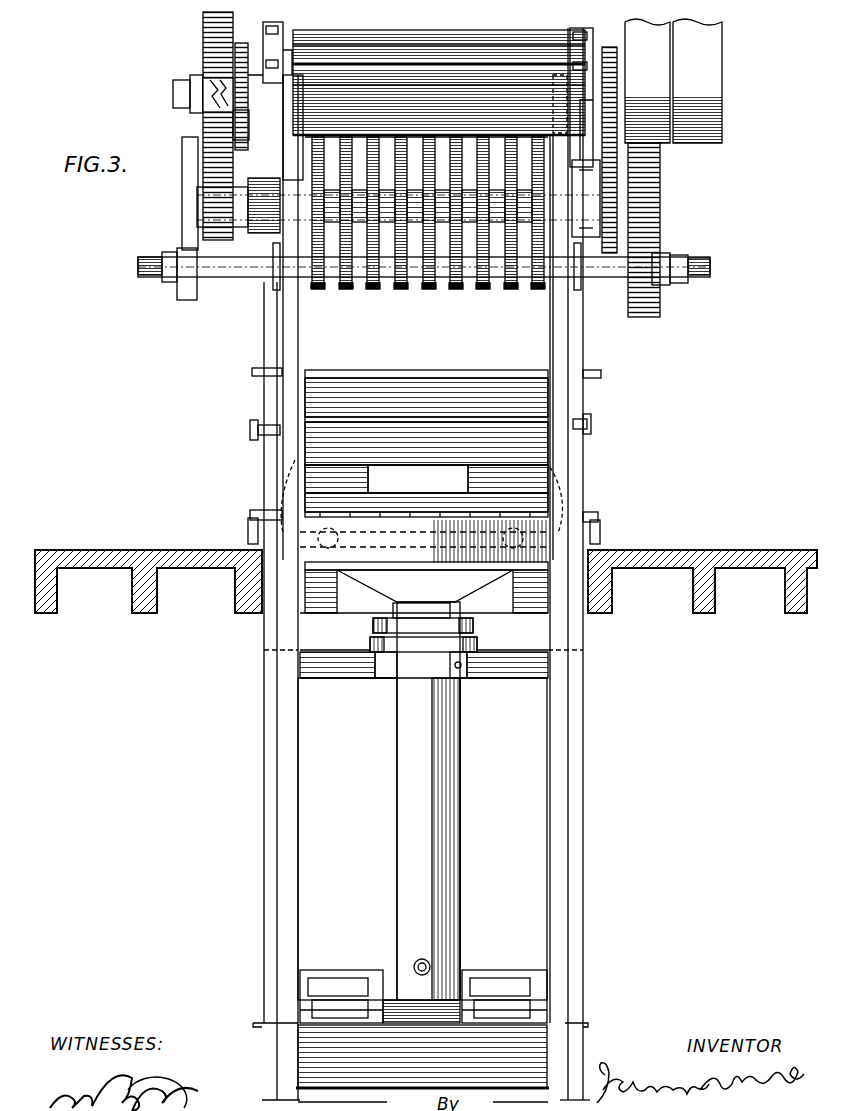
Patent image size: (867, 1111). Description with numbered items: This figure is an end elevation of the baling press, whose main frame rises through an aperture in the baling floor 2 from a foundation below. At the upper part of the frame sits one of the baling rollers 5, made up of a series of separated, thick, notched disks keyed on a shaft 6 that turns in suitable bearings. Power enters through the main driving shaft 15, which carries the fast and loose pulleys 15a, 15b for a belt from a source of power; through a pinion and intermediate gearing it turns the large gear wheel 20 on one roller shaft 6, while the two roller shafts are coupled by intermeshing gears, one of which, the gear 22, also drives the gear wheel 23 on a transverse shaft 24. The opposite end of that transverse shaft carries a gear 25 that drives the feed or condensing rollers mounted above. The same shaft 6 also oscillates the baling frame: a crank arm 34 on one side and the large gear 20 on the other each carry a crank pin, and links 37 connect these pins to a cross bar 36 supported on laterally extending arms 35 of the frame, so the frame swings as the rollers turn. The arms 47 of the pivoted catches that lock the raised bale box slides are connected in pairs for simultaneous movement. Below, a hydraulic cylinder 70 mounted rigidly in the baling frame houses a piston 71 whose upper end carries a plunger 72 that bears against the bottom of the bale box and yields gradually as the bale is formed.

The baling floor 2 is at (201, 549).
The baling roller 5 is at (372, 237).
The shaft 6 is at (218, 210).
The main driving shaft 15 is at (432, 42).
The fast pulley 15a is at (647, 81).
The loose pulley 15b is at (697, 81).
The large gear wheel 20 is at (650, 206).
The gear 22 is at (660, 175).
The gear wheel 23 is at (595, 68).
The transverse shaft 24 is at (439, 102).
The gear 25 is at (270, 26).
The crank arm 34 is at (192, 186).
The laterally extending arm 35 is at (273, 278).
The cross bar 36 is at (555, 272).
The link 37 is at (192, 268).
The arm 47 is at (257, 430).
The hydraulic cylinder 70 is at (422, 839).
The piston 71 is at (415, 608).
The plunger 72 is at (480, 590).